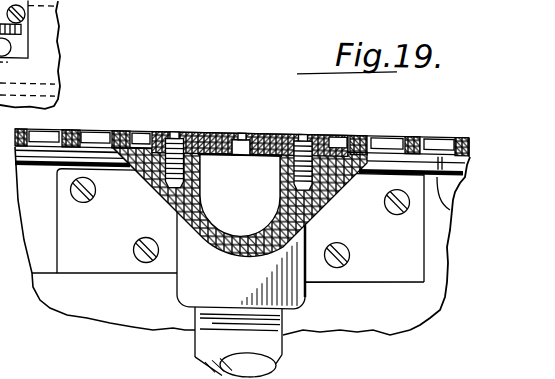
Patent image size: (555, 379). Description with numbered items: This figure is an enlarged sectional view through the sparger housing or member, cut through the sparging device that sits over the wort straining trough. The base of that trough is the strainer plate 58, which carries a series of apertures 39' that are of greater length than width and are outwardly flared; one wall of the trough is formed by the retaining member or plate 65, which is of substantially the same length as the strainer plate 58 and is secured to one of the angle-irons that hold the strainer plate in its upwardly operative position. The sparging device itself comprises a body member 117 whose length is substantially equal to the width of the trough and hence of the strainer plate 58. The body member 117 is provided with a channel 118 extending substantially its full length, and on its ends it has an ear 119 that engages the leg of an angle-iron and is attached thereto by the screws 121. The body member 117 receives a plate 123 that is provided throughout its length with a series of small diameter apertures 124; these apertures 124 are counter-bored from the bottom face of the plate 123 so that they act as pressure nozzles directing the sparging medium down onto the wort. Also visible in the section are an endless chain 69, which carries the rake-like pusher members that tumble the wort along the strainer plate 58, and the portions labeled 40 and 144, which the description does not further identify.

The strainer plate 58 is at (128, 126).
The apertures 124 is at (238, 130).
The plate 123 is at (263, 133).
The apertures 39' is at (446, 133).
The channel 118 is at (220, 203).
The body member 117 is at (327, 196).
The screws 121 is at (133, 247).
The ear 119 is at (313, 264).
The rib 40 is at (452, 191).
The endless chain 69 is at (437, 251).
The retaining member or plate 65 is at (417, 315).
The connector 144 is at (7, 65).